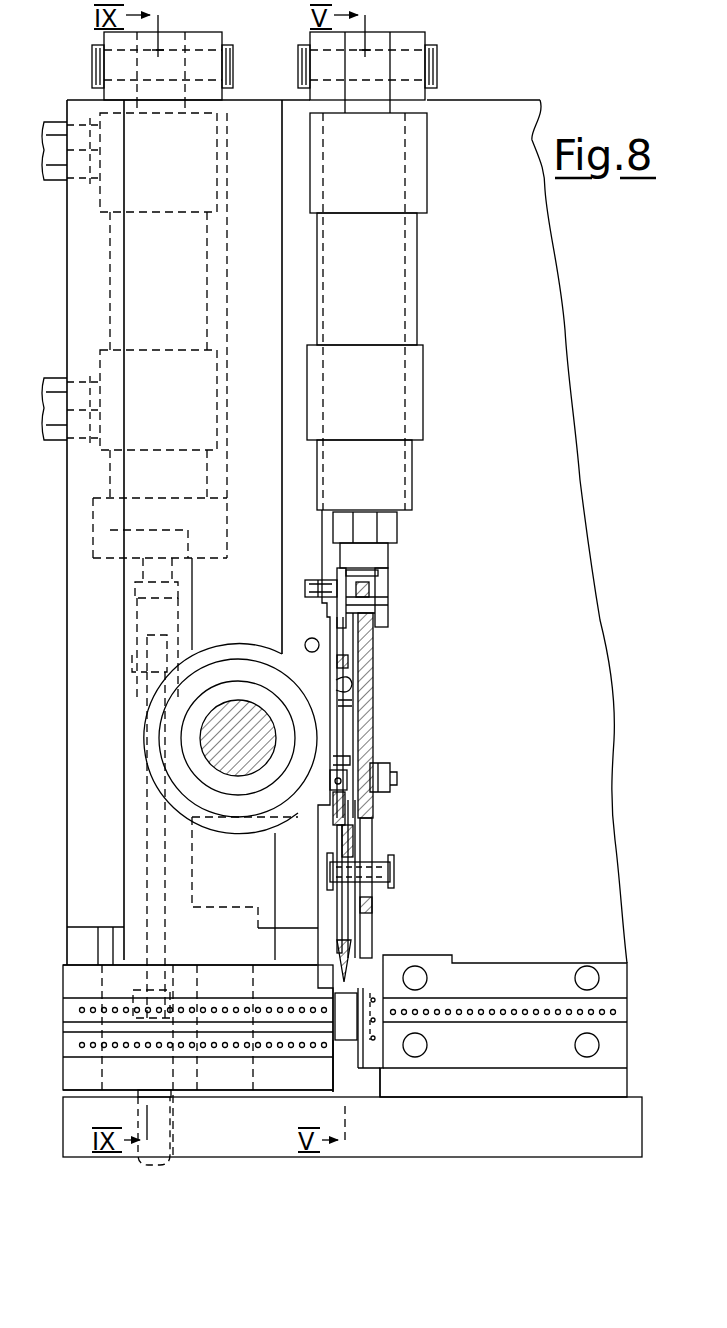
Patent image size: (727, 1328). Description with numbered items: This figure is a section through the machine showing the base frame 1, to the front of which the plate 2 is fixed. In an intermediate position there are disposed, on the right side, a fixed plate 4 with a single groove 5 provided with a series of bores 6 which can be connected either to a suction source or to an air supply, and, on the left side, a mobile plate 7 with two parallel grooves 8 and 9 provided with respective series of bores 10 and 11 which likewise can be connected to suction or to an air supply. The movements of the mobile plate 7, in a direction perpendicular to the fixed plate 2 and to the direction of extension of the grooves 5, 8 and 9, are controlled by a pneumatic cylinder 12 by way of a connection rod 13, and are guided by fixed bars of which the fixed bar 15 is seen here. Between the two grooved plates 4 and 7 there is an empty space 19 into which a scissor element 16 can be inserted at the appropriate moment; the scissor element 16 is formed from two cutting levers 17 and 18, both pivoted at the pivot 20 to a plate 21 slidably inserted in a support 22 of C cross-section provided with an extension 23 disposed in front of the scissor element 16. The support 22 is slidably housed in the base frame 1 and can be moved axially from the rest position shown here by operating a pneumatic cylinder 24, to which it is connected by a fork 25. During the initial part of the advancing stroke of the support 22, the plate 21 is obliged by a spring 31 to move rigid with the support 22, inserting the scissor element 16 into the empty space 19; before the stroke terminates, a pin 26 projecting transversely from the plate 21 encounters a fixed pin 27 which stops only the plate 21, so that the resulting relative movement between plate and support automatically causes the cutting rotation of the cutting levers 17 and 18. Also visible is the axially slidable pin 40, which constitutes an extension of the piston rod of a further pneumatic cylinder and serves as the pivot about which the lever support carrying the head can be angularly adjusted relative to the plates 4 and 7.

The base frame 1 is at (80, 664).
The plate 2 is at (72, 1122).
The fixed plate 4 is at (631, 1038).
The single groove 5 is at (509, 1020).
The bores 6 is at (480, 1008).
The mobile plate 7 is at (60, 1048).
The groove 8 is at (230, 1000).
The groove 9 is at (133, 1052).
The bores 10 is at (286, 1004).
The bores 11 is at (233, 1050).
The pneumatic cylinder 12 is at (202, 243).
The connection rod 13 is at (145, 822).
The fixed bar 15 is at (172, 1094).
The scissor element 16 is at (334, 918).
The cutting lever 17 is at (342, 950).
The cutting lever 18 is at (350, 943).
The empty space 19 is at (342, 1082).
The pivot 20 is at (386, 868).
The plate 21 is at (335, 822).
The support 22 is at (376, 672).
The extension 23 is at (350, 1036).
The pneumatic cylinder 24 is at (404, 260).
The fork 25 is at (374, 616).
The pin 26 is at (318, 586).
The fixed pin 27 is at (313, 638).
The spring 31 is at (343, 750).
The axially slidable pin 40 is at (236, 758).